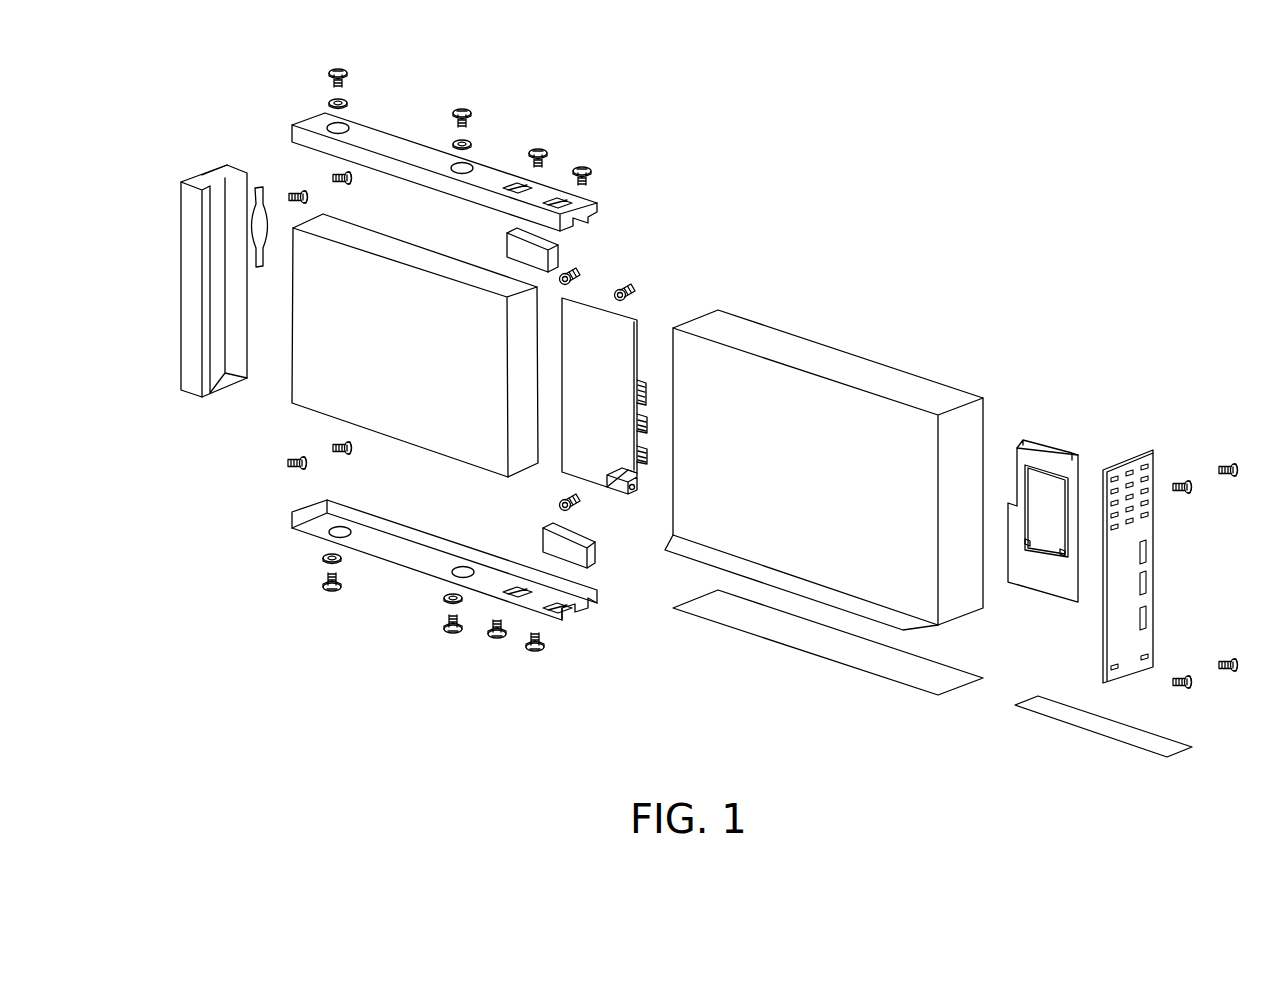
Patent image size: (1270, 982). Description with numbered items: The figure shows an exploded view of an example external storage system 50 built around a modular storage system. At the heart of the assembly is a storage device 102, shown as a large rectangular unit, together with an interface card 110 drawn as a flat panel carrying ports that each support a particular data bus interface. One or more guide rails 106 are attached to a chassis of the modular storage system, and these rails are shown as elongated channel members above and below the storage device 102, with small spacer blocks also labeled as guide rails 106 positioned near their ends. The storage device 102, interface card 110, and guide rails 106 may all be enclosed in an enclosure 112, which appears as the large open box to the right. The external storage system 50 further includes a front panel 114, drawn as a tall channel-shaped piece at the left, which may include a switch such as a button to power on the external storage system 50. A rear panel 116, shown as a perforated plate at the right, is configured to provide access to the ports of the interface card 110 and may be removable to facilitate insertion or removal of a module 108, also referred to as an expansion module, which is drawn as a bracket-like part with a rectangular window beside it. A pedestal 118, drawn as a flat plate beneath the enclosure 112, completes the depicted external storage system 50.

The external storage system 50 is at (827, 218).
The storage device 102 is at (355, 405).
The guide rails 106 is at (550, 255).
The module 108 is at (1052, 445).
The interface card 110 is at (625, 330).
The enclosure 112 is at (878, 373).
The front panel 114 is at (220, 390).
The rear panel 116 is at (1133, 465).
The pedestal 118 is at (793, 640).